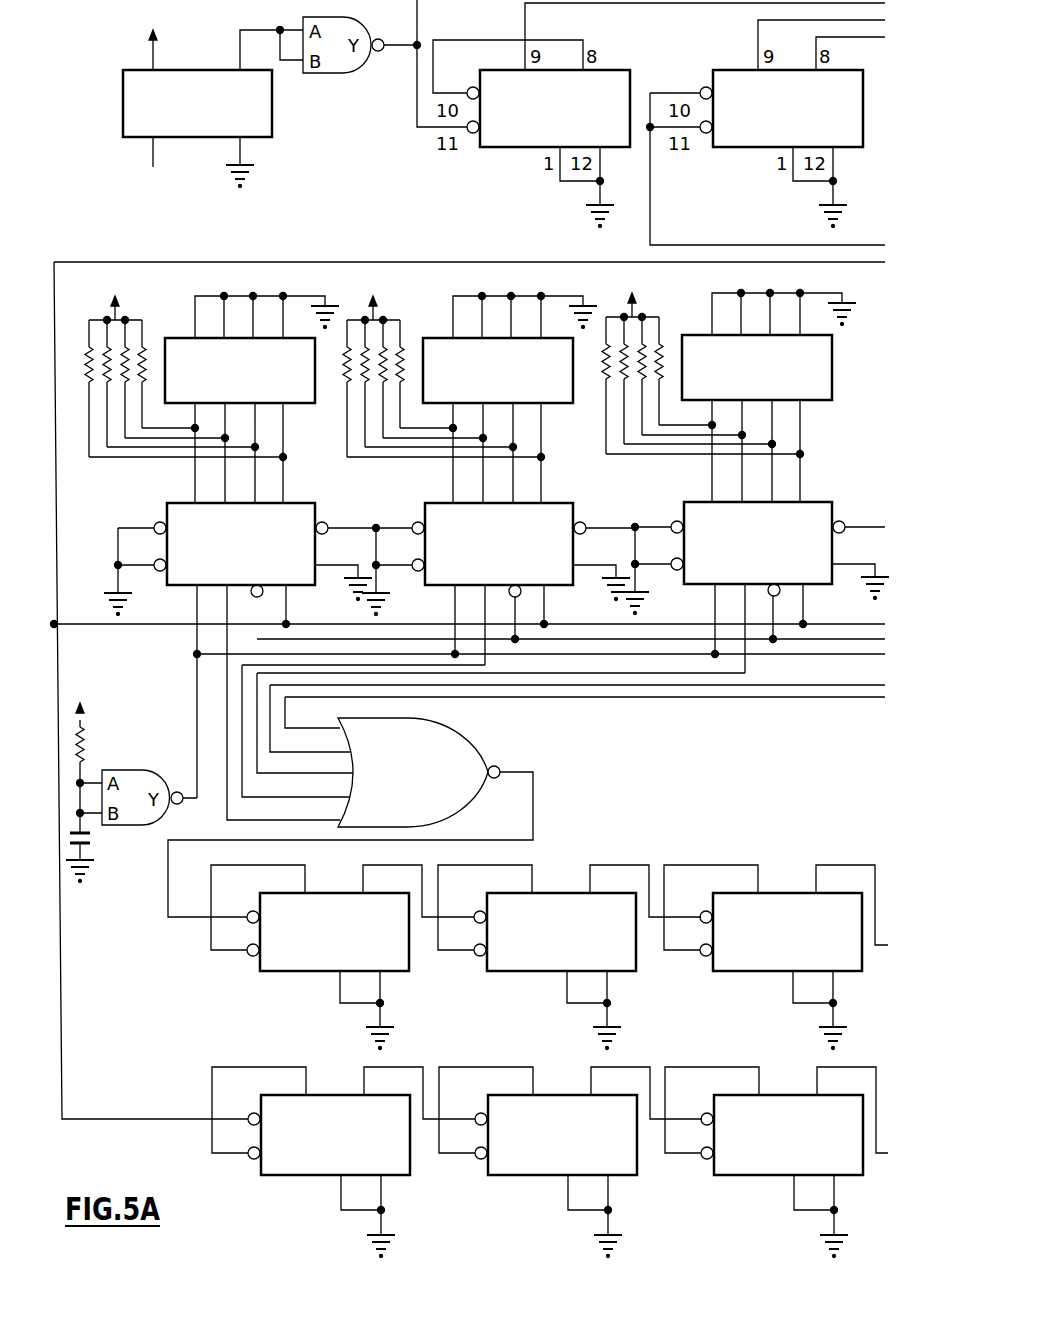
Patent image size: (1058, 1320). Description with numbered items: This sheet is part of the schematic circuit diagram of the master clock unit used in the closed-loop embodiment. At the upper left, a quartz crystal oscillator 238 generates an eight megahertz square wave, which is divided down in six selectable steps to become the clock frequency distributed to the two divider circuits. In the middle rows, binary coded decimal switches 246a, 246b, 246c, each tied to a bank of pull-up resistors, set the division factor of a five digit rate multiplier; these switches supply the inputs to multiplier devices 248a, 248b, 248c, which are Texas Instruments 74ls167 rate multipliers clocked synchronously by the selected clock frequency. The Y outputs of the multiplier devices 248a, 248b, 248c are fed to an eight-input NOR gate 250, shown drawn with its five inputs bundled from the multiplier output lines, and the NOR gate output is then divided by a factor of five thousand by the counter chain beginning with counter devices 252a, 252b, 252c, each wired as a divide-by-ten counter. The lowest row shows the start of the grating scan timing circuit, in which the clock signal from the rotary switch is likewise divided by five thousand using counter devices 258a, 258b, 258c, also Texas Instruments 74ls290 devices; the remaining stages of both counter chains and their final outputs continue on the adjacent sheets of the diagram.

The quartz crystal oscillator 238 is at (123, 105).
The binary coded decimal switch 246a is at (305, 403).
The binary coded decimal switch 246b is at (472, 387).
The binary coded decimal switch 246c is at (730, 385).
The multiplier device 248a is at (300, 503).
The multiplier device 248b is at (497, 547).
The multiplier device 248c is at (755, 546).
The eight-input NOR gate 250 is at (462, 737).
The counter device 252a is at (300, 972).
The counter device 252b is at (569, 957).
The counter device 252c is at (753, 972).
The counter device 258a is at (301, 1176).
The counter device 258b is at (570, 1162).
The counter device 258c is at (754, 1176).